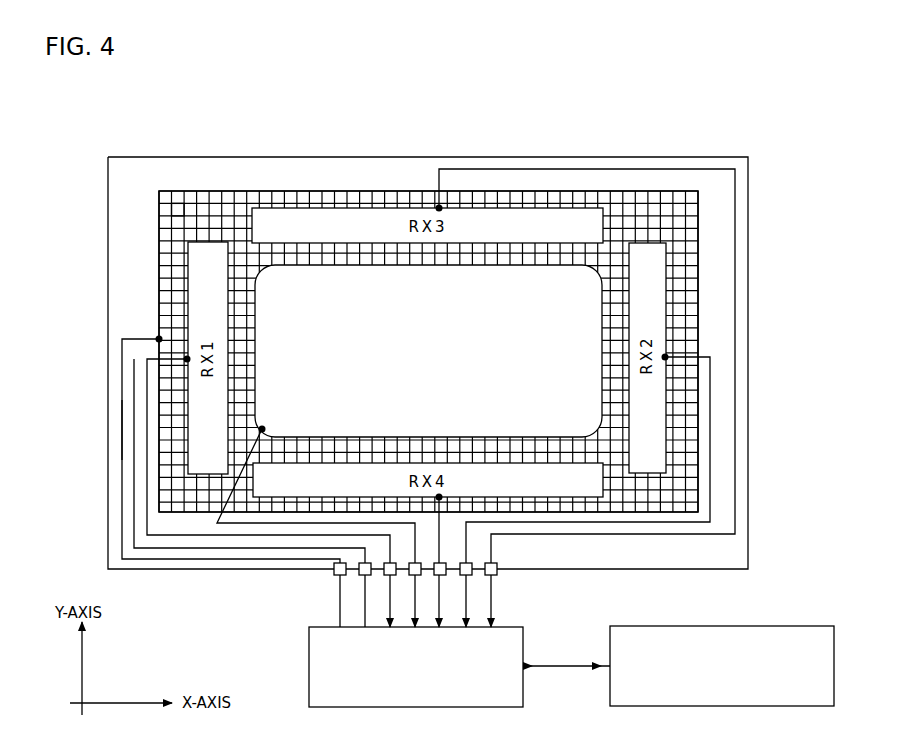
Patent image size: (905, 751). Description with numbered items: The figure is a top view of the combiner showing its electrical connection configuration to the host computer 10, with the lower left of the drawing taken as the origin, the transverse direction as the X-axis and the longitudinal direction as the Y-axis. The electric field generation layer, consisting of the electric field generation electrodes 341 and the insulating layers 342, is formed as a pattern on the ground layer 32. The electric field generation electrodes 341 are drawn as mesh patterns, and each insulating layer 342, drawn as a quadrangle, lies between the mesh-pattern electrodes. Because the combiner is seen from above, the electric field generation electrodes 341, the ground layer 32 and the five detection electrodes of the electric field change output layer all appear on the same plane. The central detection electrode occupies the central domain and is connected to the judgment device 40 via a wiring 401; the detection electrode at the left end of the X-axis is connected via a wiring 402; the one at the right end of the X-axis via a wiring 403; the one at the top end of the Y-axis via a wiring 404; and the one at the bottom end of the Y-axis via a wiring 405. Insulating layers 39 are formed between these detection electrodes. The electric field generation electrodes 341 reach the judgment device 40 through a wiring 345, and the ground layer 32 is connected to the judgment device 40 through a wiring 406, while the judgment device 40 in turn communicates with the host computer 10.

The host computer 10 is at (768, 626).
The ground layer 32 is at (267, 170).
The insulating layer 39 is at (552, 255).
The judgment device 40 is at (510, 627).
The electric field generation electrode 341 is at (208, 192).
The insulating layer 342 is at (178, 208).
The wiring 345 is at (127, 428).
The wiring 401 is at (245, 525).
The wiring 402 is at (159, 339).
The wiring 403 is at (710, 395).
The wiring 404 is at (525, 165).
The wiring 405 is at (440, 535).
The wiring 406 is at (132, 495).